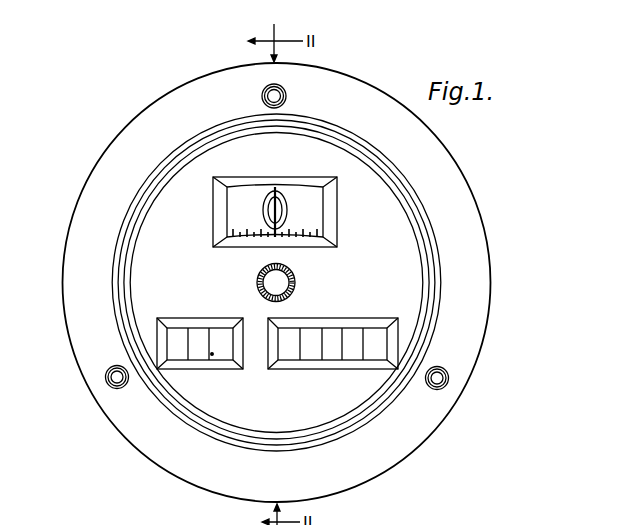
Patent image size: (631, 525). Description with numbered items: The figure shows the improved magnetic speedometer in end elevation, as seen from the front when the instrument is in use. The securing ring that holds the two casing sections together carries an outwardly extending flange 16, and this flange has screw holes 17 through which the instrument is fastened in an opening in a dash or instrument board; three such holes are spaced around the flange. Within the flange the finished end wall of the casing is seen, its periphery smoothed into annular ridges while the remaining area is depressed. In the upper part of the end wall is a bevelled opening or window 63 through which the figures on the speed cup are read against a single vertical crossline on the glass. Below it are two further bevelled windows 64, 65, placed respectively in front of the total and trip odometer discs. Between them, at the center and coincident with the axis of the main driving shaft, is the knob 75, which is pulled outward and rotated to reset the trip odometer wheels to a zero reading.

The outwardly extending flange 16 is at (445, 519).
The screw holes 17 is at (108, 383).
The bevelled opening or window 63 is at (232, 211).
The bevelled opening or window 64 is at (383, 347).
The bevelled opening or window 65 is at (166, 342).
The knob 75 is at (295, 278).